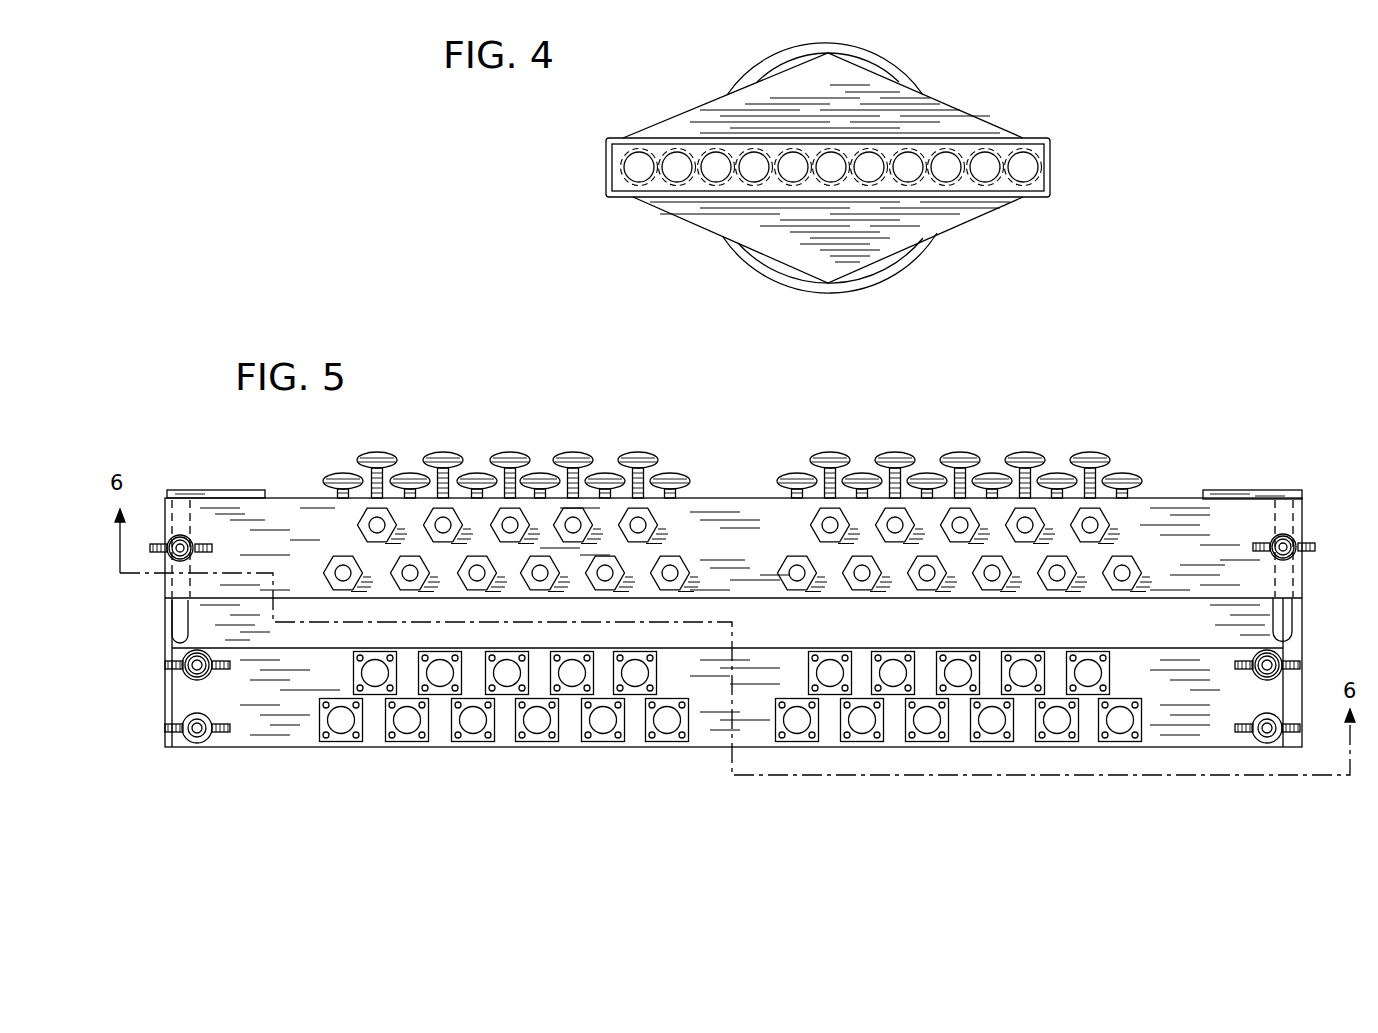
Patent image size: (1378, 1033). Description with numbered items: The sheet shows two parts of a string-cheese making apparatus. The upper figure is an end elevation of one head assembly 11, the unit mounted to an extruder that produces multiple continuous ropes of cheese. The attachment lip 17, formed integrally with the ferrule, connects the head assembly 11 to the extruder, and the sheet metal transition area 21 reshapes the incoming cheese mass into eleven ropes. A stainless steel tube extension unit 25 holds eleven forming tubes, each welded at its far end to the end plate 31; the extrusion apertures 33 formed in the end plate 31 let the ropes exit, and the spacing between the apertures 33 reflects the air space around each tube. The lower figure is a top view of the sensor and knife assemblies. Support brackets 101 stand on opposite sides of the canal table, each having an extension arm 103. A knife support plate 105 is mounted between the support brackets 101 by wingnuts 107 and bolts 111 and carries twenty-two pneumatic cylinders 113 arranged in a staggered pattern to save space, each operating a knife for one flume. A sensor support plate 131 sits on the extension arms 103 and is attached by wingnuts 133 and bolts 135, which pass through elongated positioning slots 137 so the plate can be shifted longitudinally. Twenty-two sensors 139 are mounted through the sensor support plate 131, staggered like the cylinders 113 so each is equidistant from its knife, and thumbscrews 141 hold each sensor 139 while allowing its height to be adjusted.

In FIG. 4, the head assembly 11 is at (869, 147).
In FIG. 4, the attachment lip 17 is at (900, 63).
In FIG. 4, the transition area 21 is at (983, 120).
In FIG. 4, the tube extension unit 25 is at (1052, 167).
In FIG. 4, the end plate 31 is at (923, 180).
In FIG. 4, the extrusion apertures 33 is at (714, 175).
In FIG. 5, the support brackets 101 is at (165, 738).
In FIG. 5, the extension arm 103 is at (228, 490).
In FIG. 5, the knife support plate 105 is at (1177, 738).
In FIG. 5, the wingnuts 107 is at (168, 670).
In FIG. 5, the bolts 111 is at (185, 678).
In FIG. 5, the pneumatic cylinders 113 is at (375, 695).
In FIG. 5, the sensor support plate 131 is at (1183, 517).
In FIG. 5, the wingnuts 133 is at (160, 558).
In FIG. 5, the bolts 135 is at (192, 558).
In FIG. 5, the positioning slots 137 is at (178, 620).
In FIG. 5, the sensors 139 is at (395, 568).
In FIG. 5, the thumbscrews 141 is at (560, 457).